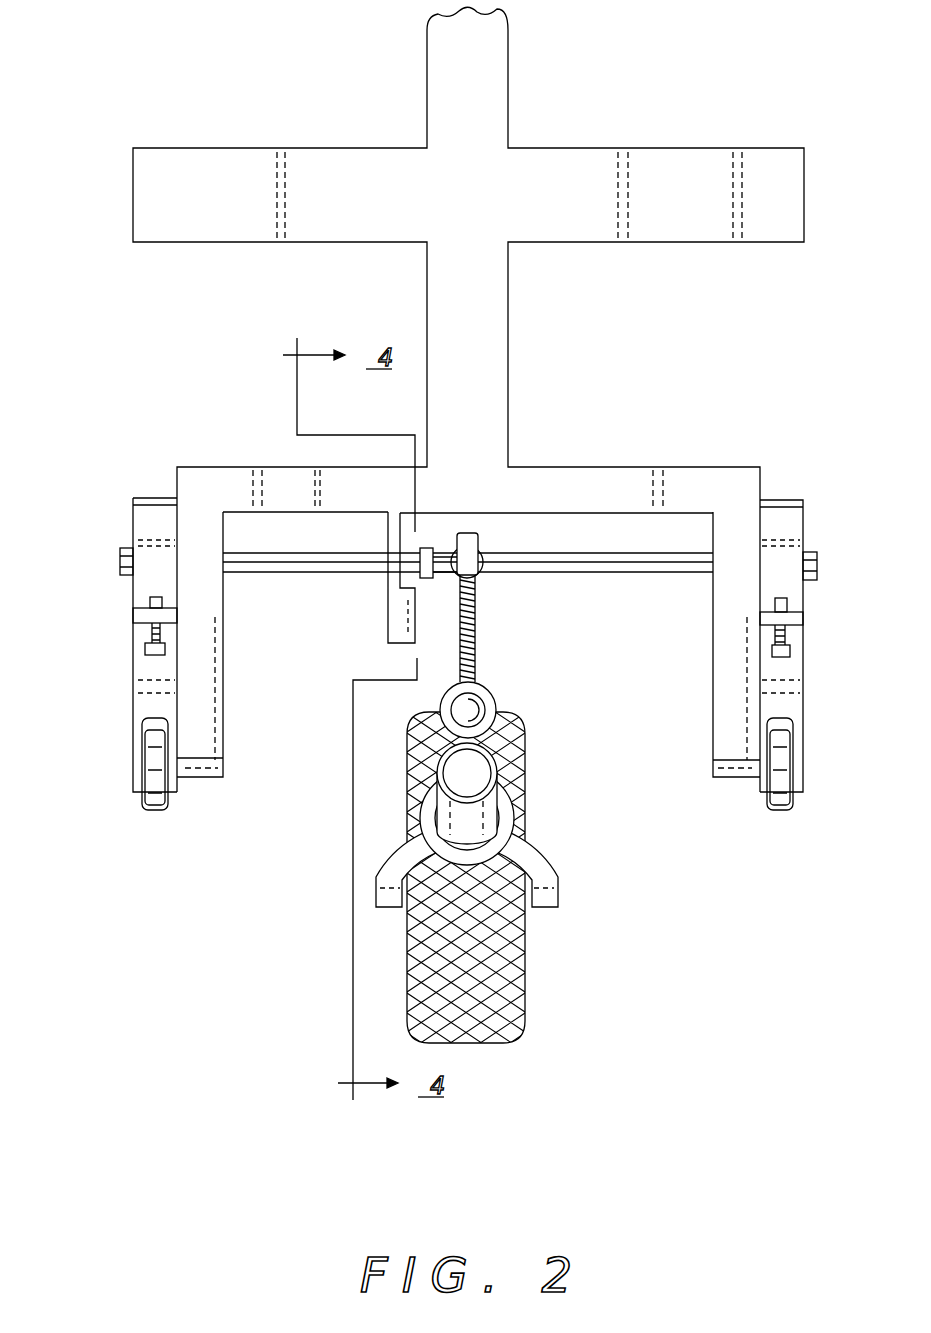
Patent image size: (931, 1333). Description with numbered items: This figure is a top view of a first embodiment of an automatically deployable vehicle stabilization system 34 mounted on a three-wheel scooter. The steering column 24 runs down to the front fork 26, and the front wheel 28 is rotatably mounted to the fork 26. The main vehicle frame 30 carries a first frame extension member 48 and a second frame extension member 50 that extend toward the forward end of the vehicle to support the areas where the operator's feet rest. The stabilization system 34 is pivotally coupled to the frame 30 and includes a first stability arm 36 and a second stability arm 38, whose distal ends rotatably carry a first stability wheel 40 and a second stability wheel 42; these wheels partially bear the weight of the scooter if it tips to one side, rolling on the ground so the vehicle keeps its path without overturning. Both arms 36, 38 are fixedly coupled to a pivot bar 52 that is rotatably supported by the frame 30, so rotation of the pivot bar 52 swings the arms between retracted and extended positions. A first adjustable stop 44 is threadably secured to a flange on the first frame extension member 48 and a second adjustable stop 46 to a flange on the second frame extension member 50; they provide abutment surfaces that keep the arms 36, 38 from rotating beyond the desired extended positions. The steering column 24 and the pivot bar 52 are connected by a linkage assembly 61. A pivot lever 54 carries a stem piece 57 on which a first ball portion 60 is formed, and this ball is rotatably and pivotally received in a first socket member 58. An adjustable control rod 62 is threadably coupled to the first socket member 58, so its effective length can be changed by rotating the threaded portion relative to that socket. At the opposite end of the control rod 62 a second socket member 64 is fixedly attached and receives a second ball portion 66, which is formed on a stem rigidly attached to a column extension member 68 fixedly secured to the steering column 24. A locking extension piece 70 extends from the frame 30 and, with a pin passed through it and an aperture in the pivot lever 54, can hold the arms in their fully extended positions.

The steering column 24 is at (485, 812).
The front fork 26 is at (537, 860).
The front wheel 28 is at (492, 958).
The frame 30 is at (470, 351).
The vehicle stabilization system 34 is at (60, 555).
The first stability arm 36 is at (147, 703).
The second stability arm 38 is at (803, 710).
The first stability wheel 40 is at (155, 800).
The second stability wheel 42 is at (788, 800).
The first adjustable stop 44 is at (152, 658).
The second adjustable stop 46 is at (785, 658).
The first frame extension member 48 is at (198, 593).
The second frame extension member 50 is at (735, 658).
The pivot bar 52 is at (603, 560).
The pivot lever 54 is at (432, 580).
The stem piece 57 is at (443, 555).
The first socket member 58 is at (472, 538).
The first ball portion 60 is at (490, 568).
The linkage assembly 61 is at (548, 598).
The adjustable control rod 62 is at (477, 657).
The second socket member 64 is at (488, 698).
The second ball portion 66 is at (463, 708).
The column extension member 68 is at (513, 735).
The locking extension piece 70 is at (397, 615).